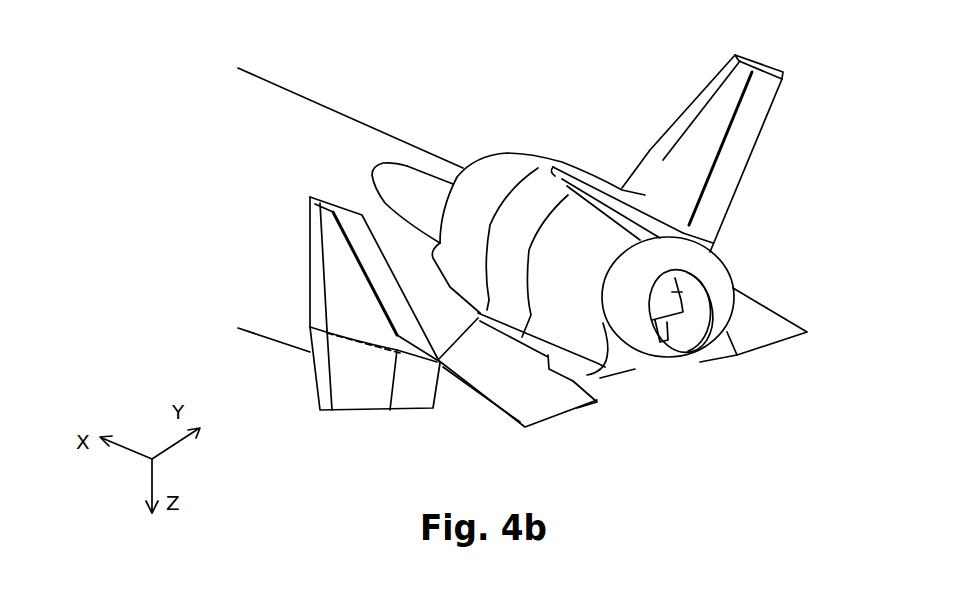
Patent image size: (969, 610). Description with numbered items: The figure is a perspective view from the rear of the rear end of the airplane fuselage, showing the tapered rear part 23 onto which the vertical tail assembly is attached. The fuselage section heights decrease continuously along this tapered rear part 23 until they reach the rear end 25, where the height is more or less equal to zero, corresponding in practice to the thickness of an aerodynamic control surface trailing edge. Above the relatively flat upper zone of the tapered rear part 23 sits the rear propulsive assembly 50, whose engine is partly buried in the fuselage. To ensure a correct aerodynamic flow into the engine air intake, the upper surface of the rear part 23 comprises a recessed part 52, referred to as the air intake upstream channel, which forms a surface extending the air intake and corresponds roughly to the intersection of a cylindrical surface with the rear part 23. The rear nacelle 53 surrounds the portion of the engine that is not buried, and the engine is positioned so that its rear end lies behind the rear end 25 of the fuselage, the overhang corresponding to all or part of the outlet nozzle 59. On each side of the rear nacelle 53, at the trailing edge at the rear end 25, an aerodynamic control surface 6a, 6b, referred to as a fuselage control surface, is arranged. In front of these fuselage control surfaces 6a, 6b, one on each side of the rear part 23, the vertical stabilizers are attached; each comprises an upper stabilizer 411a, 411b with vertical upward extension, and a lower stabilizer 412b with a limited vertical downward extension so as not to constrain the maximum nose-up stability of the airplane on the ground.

The tapered rear part 23 is at (287, 130).
The rear end 25 is at (575, 408).
The rear propulsive assembly 50 is at (515, 144).
The recessed part 52 is at (398, 185).
The rear nacelle 53 is at (567, 223).
The outlet nozzle 59 is at (700, 343).
The aerodynamic control surface 6a is at (770, 323).
The aerodynamic control surface 6b is at (503, 392).
The upper stabilizer 411a is at (682, 122).
The upper stabilizer 411b is at (313, 283).
The lower stabilizer 412b is at (327, 385).